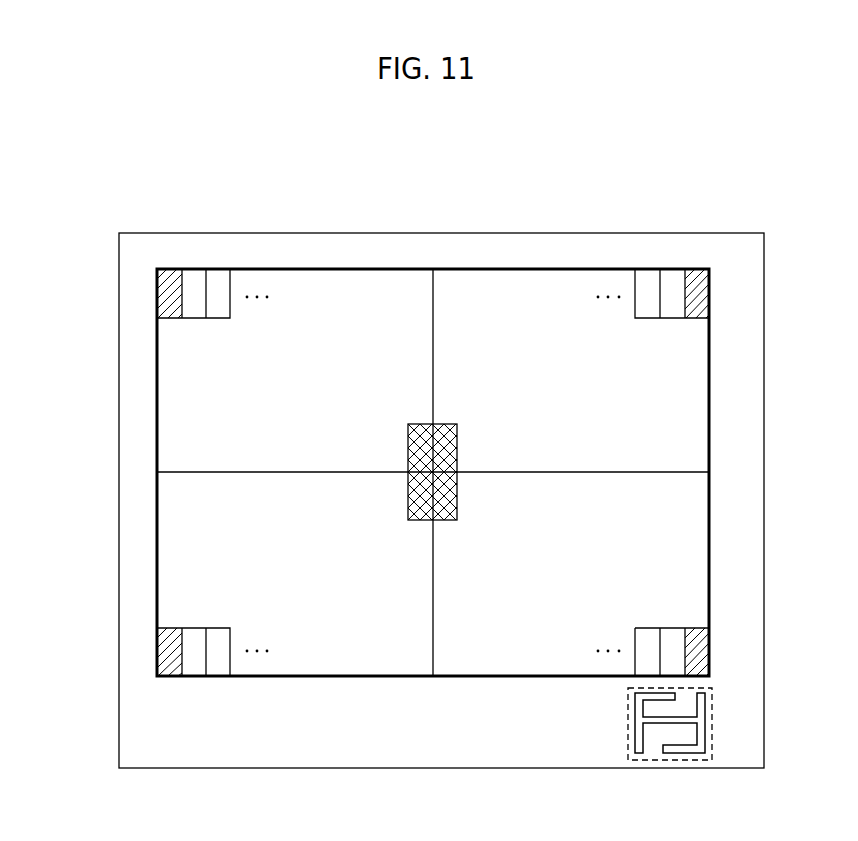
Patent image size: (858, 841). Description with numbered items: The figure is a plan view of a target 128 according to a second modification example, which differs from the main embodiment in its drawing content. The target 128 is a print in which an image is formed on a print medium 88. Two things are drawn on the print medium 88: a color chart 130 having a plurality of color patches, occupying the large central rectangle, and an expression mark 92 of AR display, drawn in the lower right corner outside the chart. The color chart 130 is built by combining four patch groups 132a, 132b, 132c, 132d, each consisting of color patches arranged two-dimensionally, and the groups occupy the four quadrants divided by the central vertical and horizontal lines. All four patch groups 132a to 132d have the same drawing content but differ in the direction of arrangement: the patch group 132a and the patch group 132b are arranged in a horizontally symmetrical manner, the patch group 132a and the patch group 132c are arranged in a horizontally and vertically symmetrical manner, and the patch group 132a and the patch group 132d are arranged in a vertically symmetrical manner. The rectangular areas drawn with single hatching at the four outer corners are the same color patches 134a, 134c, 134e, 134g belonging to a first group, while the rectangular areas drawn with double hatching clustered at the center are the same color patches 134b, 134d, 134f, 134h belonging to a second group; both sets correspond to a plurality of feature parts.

The print medium 88 is at (730, 257).
The expression mark of AR display 92 is at (628, 728).
The target 128 is at (153, 197).
The color chart 130 is at (478, 267).
The patch group 132a is at (702, 542).
The patch group 132b is at (182, 542).
The patch group 132c is at (182, 408).
The patch group 132d is at (702, 408).
The color patch 134a is at (697, 636).
The color patch 134b is at (446, 517).
The color patch 134c is at (170, 636).
The color patch 134d is at (420, 517).
The color patch 134e is at (170, 312).
The color patch 134f is at (420, 428).
The color patch 134g is at (697, 310).
The color patch 134h is at (446, 428).